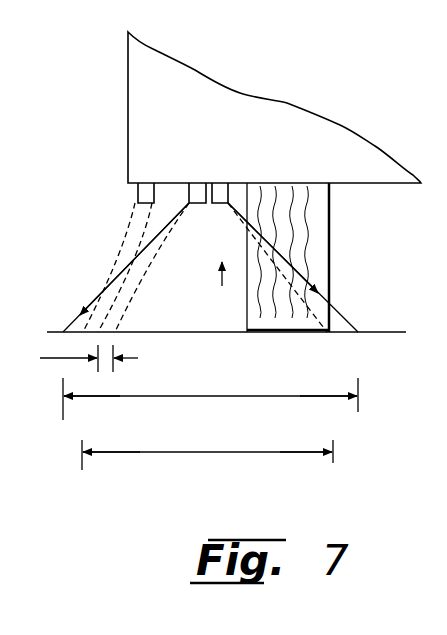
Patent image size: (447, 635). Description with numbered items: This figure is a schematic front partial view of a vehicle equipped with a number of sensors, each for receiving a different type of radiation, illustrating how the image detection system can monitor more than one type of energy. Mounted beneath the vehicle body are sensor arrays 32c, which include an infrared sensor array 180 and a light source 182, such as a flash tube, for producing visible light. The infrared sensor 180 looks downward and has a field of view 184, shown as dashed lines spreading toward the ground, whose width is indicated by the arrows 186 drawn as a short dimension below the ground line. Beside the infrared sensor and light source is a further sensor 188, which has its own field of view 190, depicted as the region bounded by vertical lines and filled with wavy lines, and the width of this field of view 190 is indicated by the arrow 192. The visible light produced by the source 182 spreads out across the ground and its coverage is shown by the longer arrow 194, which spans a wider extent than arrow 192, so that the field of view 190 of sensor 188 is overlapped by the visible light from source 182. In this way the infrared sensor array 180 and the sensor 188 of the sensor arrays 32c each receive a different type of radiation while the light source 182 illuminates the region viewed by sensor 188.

The sensor arrays 32c is at (128, 193).
The infrared sensor array 180 is at (147, 183).
The light source 182 is at (198, 183).
The field of view 184 is at (127, 252).
The arrows 186 is at (75, 357).
The sensor 188 is at (221, 183).
The field of view 190 is at (252, 200).
The arrow 192 is at (193, 437).
The arrow 194 is at (234, 395).